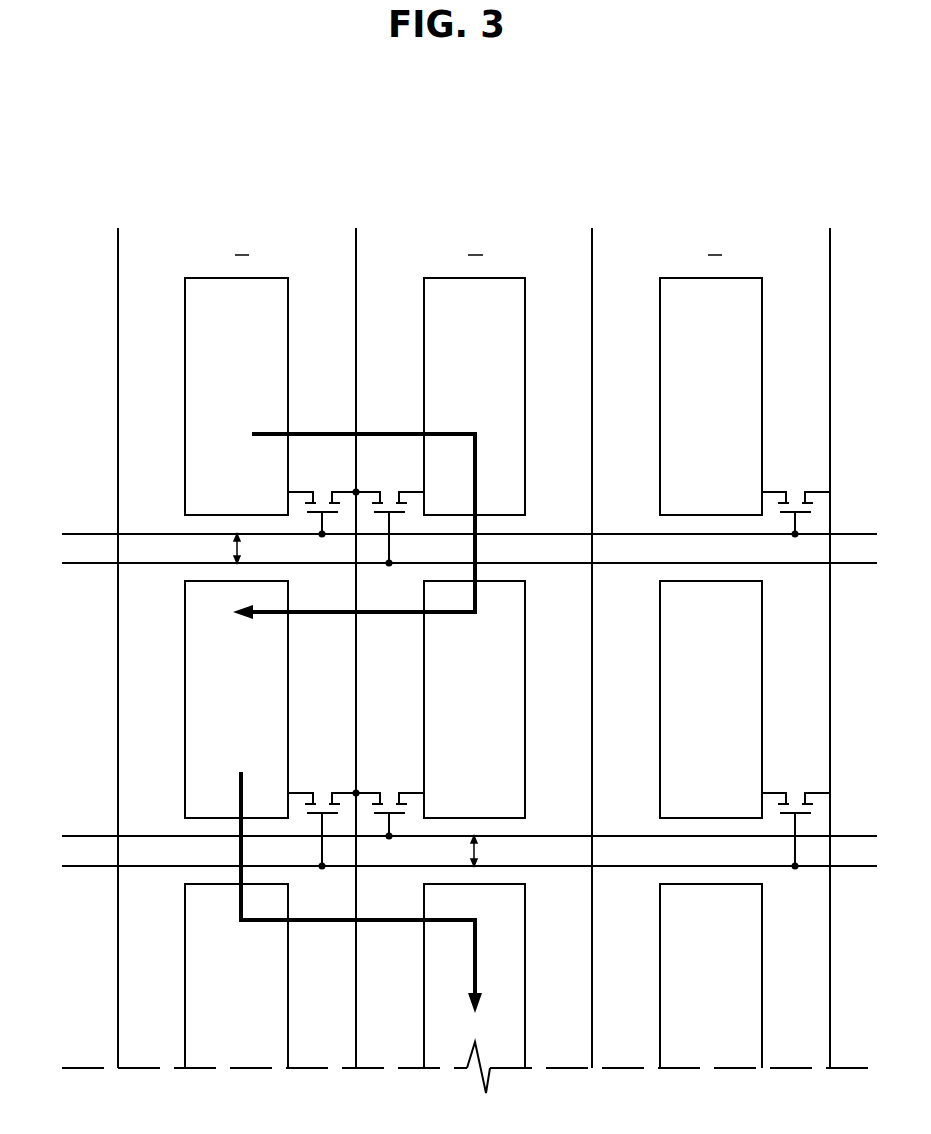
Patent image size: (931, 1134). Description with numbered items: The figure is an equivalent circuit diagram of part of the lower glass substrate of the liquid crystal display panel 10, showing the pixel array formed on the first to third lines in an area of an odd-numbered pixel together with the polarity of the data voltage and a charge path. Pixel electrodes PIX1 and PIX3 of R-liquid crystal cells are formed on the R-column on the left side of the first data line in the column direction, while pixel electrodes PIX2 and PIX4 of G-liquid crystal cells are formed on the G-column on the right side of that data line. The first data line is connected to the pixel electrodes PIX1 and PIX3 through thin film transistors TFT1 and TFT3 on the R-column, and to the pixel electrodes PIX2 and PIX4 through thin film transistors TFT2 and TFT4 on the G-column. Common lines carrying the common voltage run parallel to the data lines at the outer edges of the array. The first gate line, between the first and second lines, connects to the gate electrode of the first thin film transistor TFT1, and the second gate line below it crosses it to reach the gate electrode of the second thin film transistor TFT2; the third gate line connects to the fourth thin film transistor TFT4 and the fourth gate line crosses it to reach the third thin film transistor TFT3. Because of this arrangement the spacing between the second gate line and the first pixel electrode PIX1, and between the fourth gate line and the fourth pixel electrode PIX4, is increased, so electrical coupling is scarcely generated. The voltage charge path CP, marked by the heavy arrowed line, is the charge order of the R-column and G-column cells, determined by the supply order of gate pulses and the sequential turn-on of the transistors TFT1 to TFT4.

The liquid crystal display panel 10 is at (161, 157).
The first pixel electrode PIX1 is at (261, 383).
The second pixel electrode PIX2 is at (497, 383).
The third pixel electrode PIX3 is at (261, 688).
The fourth pixel electrode PIX4 is at (497, 688).
The first thin film transistor TFT1 is at (322, 499).
The second thin film transistor TFT2 is at (390, 514).
The third thin film transistor TFT3 is at (322, 816).
The fourth thin film transistor TFT4 is at (390, 801).
The voltage charge path CP is at (475, 464).